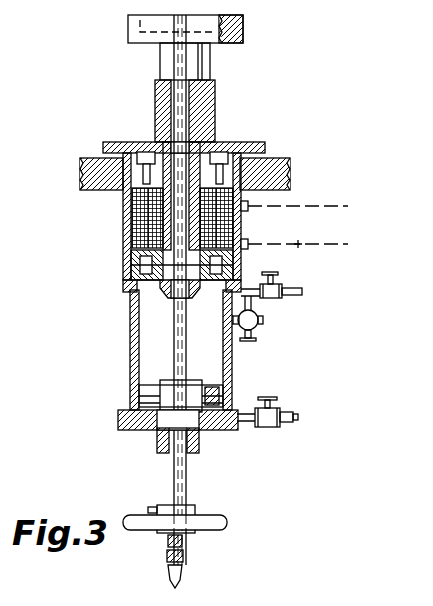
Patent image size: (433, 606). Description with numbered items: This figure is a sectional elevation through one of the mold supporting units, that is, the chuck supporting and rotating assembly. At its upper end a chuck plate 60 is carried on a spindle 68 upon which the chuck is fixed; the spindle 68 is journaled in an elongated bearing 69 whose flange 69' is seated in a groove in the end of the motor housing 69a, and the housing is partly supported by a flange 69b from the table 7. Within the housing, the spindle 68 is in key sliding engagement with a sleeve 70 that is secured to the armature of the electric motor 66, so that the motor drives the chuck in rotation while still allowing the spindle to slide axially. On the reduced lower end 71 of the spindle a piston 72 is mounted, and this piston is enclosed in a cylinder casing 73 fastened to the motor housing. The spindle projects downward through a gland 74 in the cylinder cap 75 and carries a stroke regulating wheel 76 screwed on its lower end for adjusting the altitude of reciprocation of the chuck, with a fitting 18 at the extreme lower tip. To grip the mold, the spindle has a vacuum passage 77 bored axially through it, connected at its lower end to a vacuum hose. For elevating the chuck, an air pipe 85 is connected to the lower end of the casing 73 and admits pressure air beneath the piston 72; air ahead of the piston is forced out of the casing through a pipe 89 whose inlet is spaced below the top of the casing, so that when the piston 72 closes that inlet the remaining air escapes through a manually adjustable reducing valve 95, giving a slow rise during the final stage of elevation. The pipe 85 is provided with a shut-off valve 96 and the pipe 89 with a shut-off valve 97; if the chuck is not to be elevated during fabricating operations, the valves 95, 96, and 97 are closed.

The top plate 60 is at (244, 32).
The spindle 68 is at (213, 103).
The elongated bearing 69 is at (165, 187).
The flange 69' is at (275, 127).
The motor housing 69a is at (249, 220).
The flange 69b is at (262, 152).
The table 7 is at (82, 160).
The sleeve 70 is at (152, 150).
The electric motor 66 is at (125, 223).
The reduced lower end 71 is at (172, 318).
The vacuum passage 77 is at (163, 343).
The cylinder casing 73 is at (131, 378).
The piston 72 is at (140, 398).
The cylinder cap 75 is at (140, 432).
The gland 74 is at (186, 455).
The stroke regulating wheel 76 is at (200, 520).
The tip 18 is at (184, 575).
The reducing valve 95 is at (275, 290).
The shut-off valve 97 is at (262, 323).
The pipe 89 is at (236, 324).
The shut-off valve 96 is at (270, 412).
The air pipe 85 is at (299, 418).